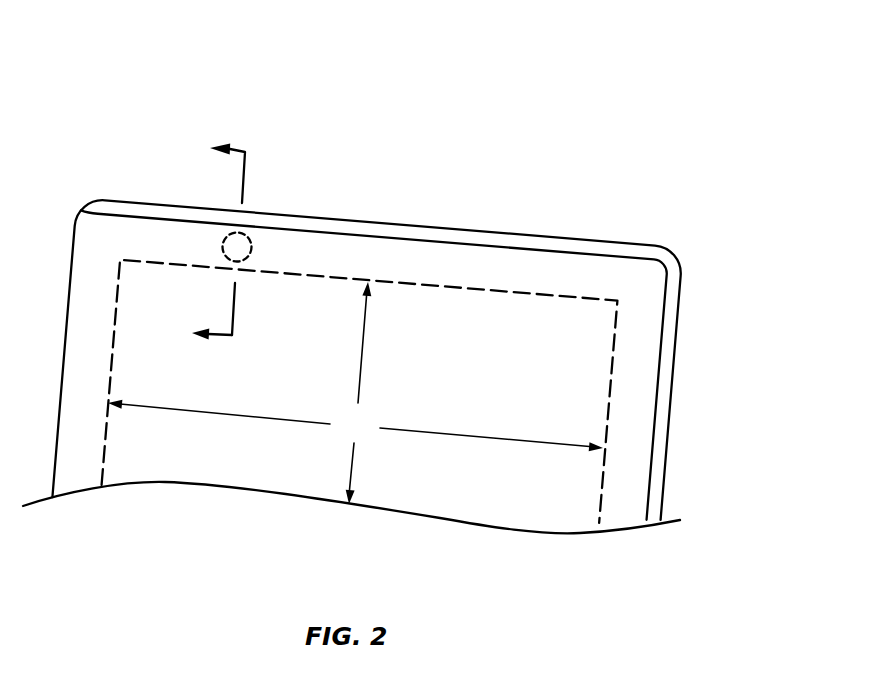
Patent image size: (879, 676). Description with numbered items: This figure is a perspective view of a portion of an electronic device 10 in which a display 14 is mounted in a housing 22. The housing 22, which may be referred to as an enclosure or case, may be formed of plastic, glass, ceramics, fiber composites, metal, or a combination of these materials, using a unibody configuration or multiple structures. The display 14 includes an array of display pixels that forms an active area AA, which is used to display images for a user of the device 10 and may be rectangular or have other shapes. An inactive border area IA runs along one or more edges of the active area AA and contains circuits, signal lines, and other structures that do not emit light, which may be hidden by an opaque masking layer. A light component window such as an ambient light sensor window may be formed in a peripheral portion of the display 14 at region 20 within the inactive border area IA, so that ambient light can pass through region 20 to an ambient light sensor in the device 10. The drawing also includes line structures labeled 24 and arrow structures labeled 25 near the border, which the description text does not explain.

The electronic device 10 is at (604, 69).
The display 14 is at (573, 343).
The region 20 is at (252, 247).
The housing 22 is at (603, 240).
The pixel row / signal line 24 is at (243, 174).
The direction arrow 25 is at (233, 148).
The inactive border area IA is at (482, 267).
The active area AA is at (355, 393).